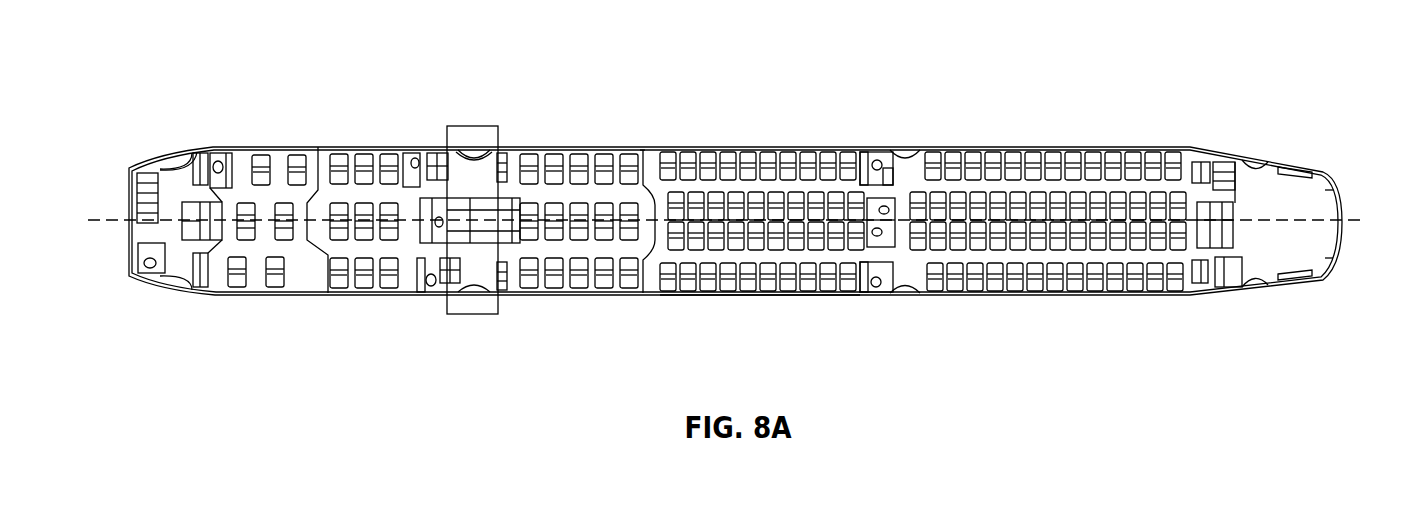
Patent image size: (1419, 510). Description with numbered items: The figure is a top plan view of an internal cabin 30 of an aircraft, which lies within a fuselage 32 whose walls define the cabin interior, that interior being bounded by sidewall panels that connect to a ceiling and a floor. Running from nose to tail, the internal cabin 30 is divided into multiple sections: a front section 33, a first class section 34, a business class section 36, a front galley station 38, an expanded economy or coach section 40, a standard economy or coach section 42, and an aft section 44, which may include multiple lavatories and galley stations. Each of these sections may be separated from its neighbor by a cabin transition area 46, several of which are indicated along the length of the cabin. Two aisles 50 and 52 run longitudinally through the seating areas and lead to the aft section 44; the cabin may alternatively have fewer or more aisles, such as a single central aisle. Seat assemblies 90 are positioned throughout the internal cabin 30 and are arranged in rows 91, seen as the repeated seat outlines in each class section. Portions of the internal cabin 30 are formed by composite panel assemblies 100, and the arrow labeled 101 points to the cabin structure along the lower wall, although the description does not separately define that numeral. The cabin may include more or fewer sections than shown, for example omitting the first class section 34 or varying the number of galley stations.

The internal cabin 30 is at (262, 50).
The fuselage 32 is at (594, 102).
The front section 33 is at (182, 309).
The first class section 34 is at (280, 296).
The business class section 36 is at (352, 147).
The front galley station 38 is at (473, 314).
The expanded economy or coach section 40 is at (573, 296).
The standard economy or coach section 42 is at (700, 147).
The aft section 44 is at (1262, 180).
The cabin transition area 46 is at (199, 147).
The aisle 50 is at (1060, 190).
The aisle 52 is at (1078, 262).
The seat assembly 90 is at (828, 147).
The row 91 is at (819, 134).
The composite panel assembly 100 is at (662, 296).
The cabin floor 101 is at (690, 313).